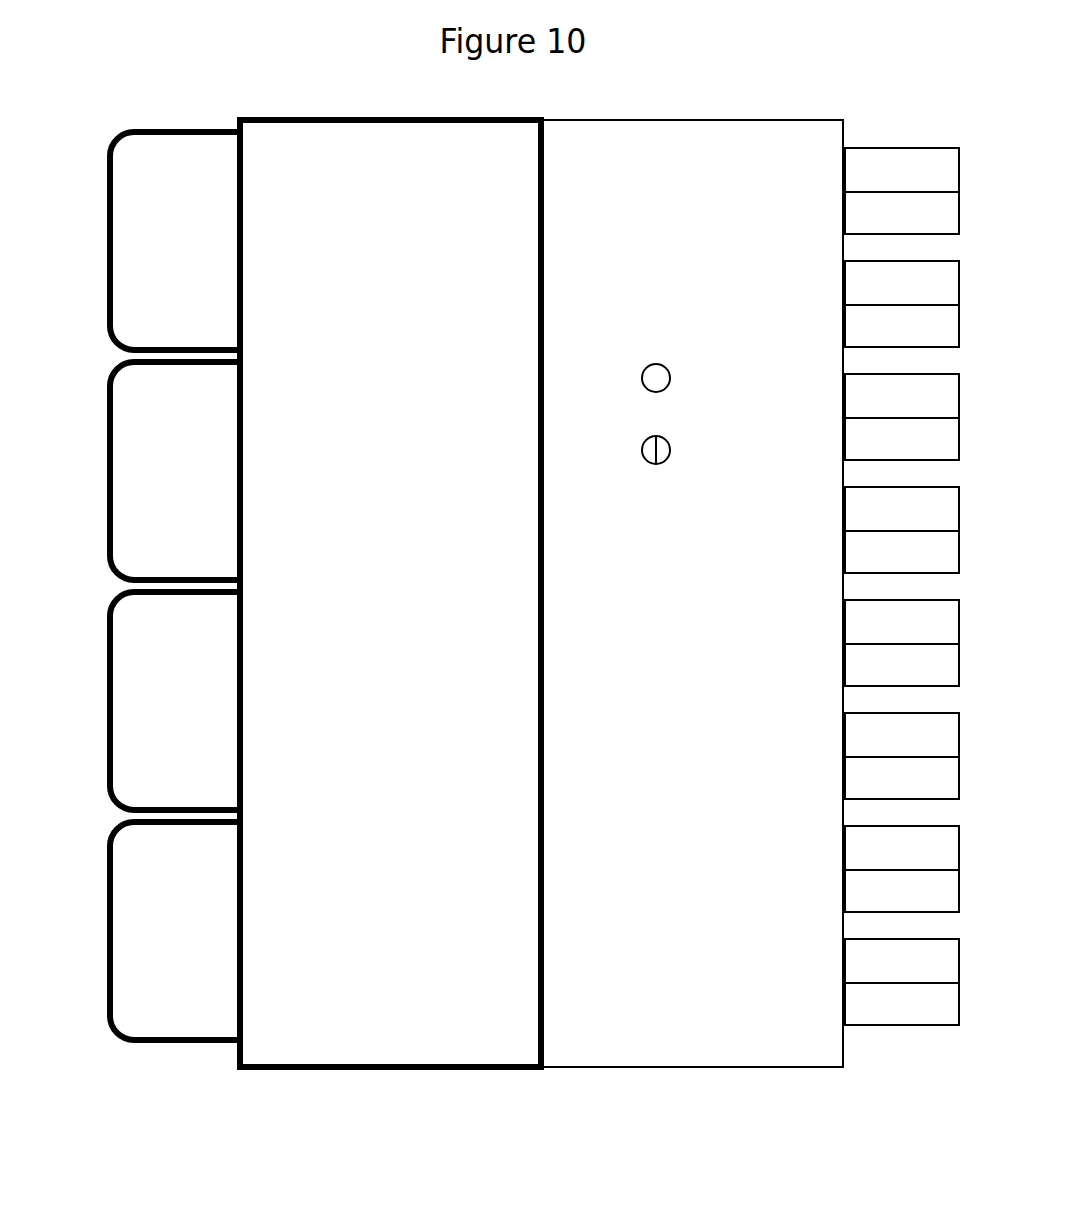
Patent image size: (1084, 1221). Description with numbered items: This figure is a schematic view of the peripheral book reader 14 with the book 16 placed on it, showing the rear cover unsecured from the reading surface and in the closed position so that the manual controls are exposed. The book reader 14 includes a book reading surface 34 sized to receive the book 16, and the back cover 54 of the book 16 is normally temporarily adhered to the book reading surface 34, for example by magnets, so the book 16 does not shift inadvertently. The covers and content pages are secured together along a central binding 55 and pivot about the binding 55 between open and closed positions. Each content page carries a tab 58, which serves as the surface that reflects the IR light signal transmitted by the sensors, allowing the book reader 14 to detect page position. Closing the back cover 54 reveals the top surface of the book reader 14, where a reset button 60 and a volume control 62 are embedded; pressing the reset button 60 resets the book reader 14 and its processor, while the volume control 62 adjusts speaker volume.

The peripheral book reader 14 is at (672, 967).
The book 16 is at (283, 177).
The book reading surface 34 is at (749, 118).
The back cover 54 is at (325, 192).
The central binding 55 is at (543, 750).
The tab 58 is at (108, 150).
The reset button 60 is at (648, 366).
The volume control 62 is at (649, 463).